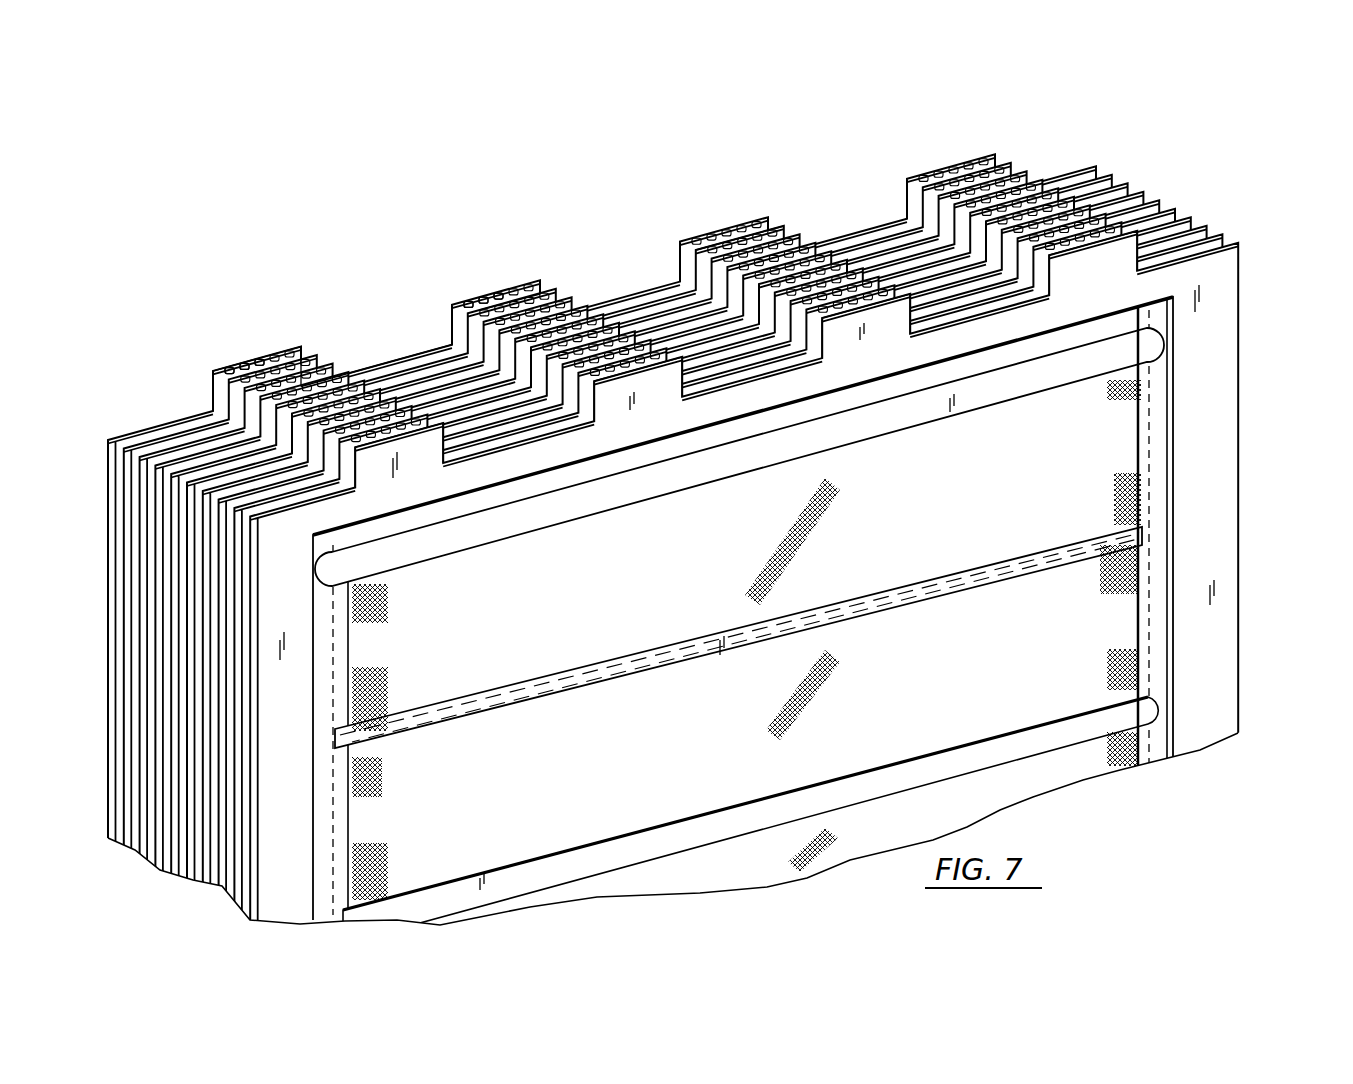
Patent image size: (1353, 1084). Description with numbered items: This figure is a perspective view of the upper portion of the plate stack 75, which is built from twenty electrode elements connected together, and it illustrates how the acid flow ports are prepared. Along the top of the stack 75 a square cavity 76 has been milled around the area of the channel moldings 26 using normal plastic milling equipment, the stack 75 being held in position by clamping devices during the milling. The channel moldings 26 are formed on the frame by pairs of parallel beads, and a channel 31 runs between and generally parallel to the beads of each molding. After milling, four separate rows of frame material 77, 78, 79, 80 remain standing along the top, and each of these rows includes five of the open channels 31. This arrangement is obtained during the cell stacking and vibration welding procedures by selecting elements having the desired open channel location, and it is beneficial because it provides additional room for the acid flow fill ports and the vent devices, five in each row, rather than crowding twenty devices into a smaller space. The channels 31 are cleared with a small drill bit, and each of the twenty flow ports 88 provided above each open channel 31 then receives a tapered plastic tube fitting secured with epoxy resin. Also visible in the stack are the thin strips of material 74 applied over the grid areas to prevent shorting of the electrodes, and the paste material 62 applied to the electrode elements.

The channel moldings 26 is at (495, 292).
The channel 31 is at (742, 240).
The paste material 62 is at (1107, 388).
The thin strips of material 74 is at (1148, 487).
The plate stack 75 is at (1182, 148).
The square cavity 76 is at (387, 357).
The row of frame material 77 is at (241, 366).
The row of frame material 78 is at (461, 301).
The row of frame material 79 is at (699, 230).
The row of frame material 80 is at (910, 183).
The flow ports 88 is at (273, 362).